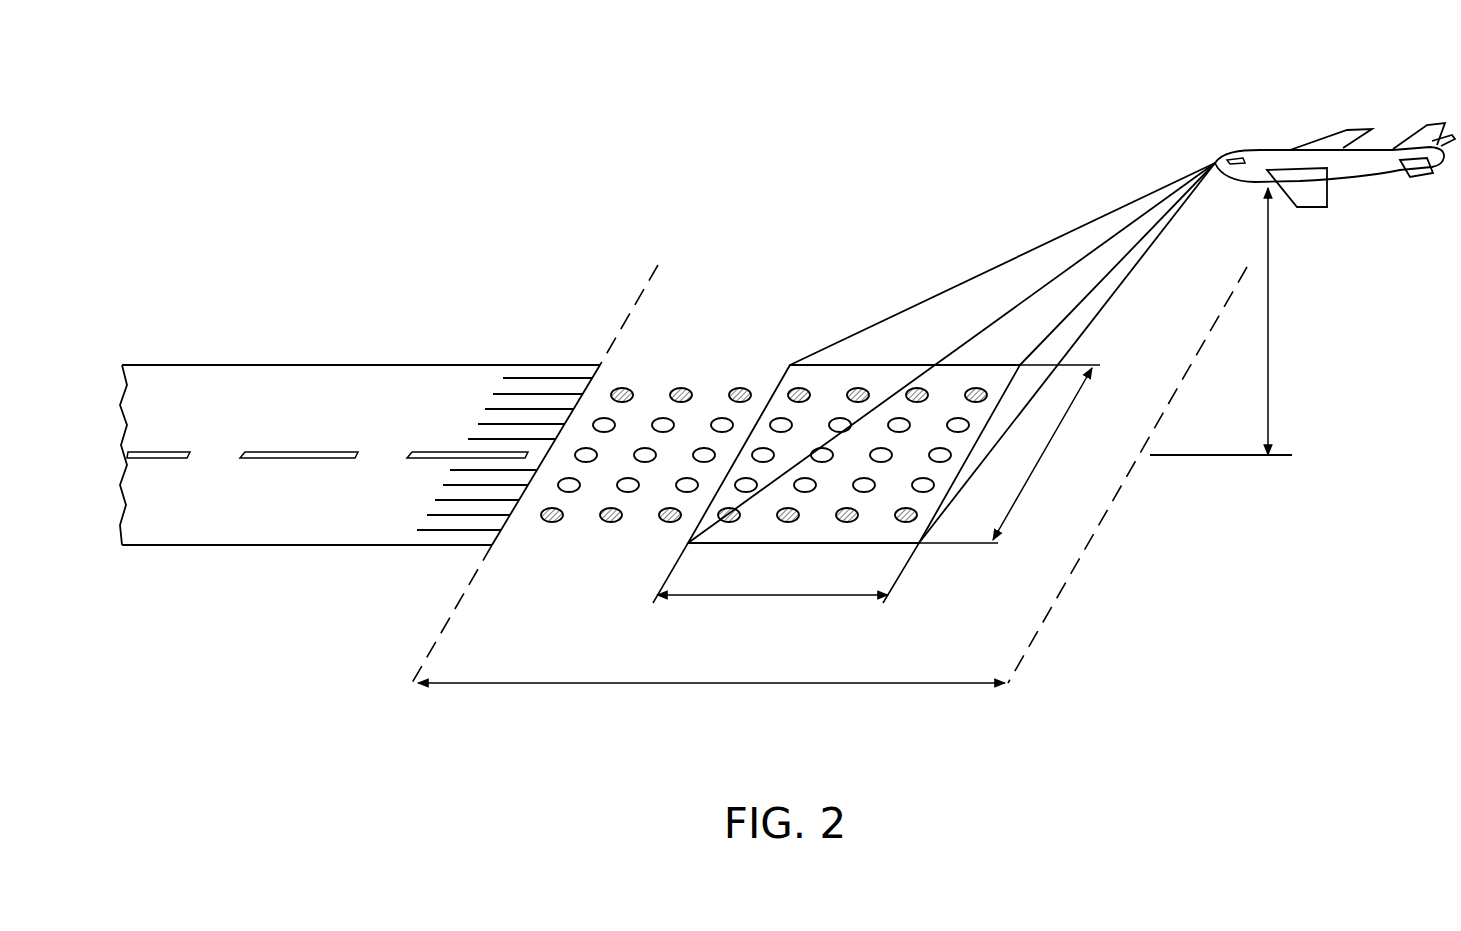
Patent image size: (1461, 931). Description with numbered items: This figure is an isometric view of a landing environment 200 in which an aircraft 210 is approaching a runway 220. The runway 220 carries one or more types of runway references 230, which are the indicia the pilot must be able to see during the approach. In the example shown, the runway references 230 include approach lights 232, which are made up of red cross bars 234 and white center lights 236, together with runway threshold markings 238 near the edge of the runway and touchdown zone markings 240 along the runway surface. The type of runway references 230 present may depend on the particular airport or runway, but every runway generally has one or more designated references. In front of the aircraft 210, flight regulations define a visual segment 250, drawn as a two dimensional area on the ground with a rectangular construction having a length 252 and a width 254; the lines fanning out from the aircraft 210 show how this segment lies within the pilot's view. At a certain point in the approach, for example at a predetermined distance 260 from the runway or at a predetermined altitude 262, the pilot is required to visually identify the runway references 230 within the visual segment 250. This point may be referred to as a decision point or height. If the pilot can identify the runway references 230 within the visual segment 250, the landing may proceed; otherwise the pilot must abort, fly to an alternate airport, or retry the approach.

The landing environment 200 is at (339, 120).
The aircraft 210 is at (1262, 150).
The runway 220 is at (288, 365).
The runway references 230 is at (781, 391).
The approach lights 232 is at (635, 563).
The red cross bars 234 is at (550, 523).
The white center lights 236 is at (573, 492).
The runway threshold markings 238 is at (455, 603).
The touchdown zone markings 240 is at (440, 546).
The visual segment 250 is at (815, 547).
The length 252 is at (776, 598).
The width 254 is at (1048, 443).
The predetermined distance 260 is at (720, 686).
The predetermined altitude 262 is at (1270, 335).